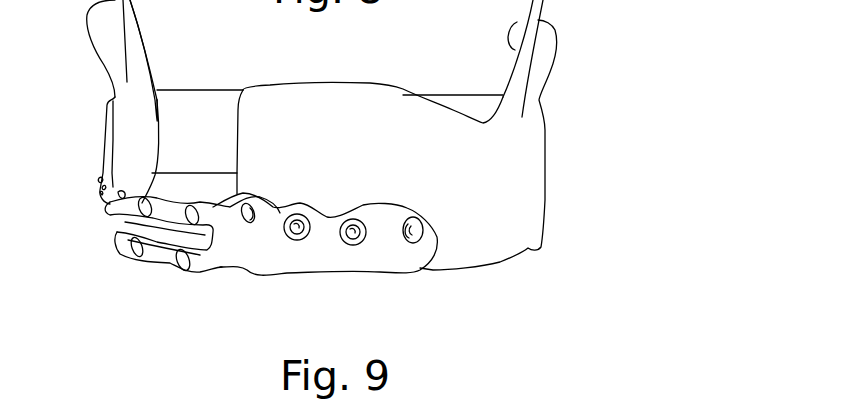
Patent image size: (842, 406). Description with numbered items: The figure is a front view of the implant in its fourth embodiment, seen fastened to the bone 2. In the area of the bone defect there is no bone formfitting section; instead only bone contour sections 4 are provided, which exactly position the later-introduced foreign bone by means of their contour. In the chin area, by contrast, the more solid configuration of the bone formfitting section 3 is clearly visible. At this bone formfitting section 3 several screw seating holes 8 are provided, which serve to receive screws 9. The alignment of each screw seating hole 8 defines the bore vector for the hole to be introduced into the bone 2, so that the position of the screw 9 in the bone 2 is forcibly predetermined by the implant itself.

The bone 2 is at (125, 87).
The bone formfitting section 3 is at (240, 248).
The bone contour section 4 is at (157, 255).
The screw seating hole 8 is at (297, 228).
The screw 9 is at (353, 233).